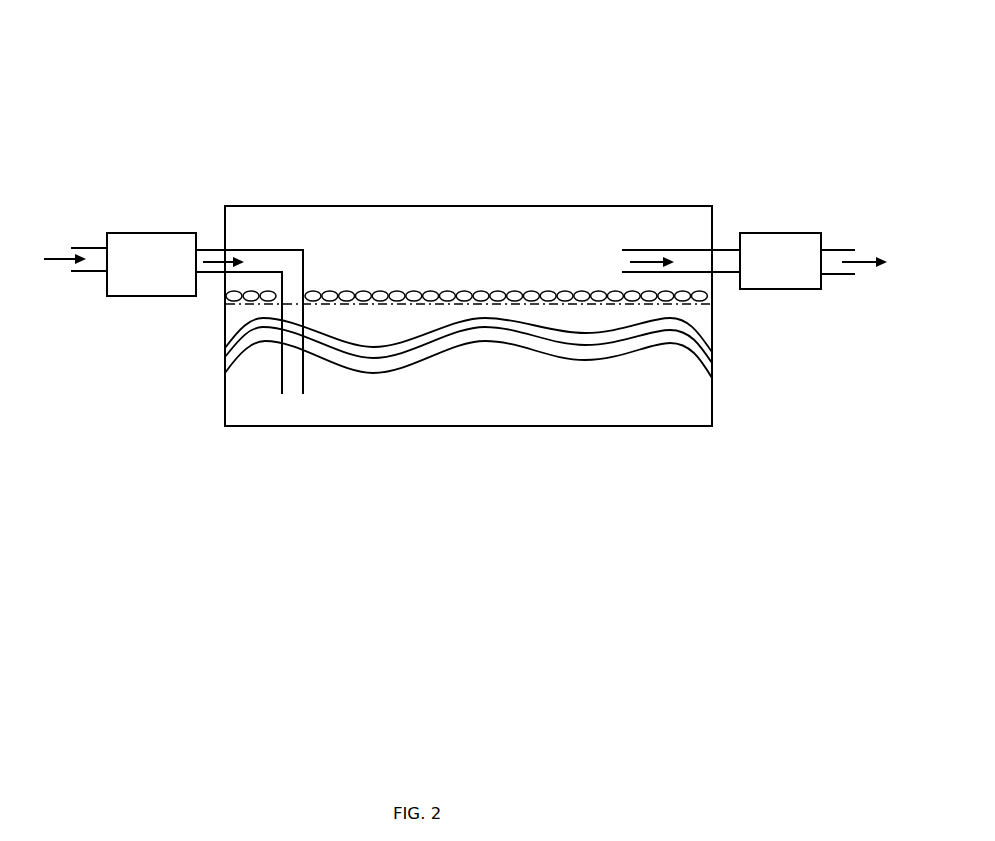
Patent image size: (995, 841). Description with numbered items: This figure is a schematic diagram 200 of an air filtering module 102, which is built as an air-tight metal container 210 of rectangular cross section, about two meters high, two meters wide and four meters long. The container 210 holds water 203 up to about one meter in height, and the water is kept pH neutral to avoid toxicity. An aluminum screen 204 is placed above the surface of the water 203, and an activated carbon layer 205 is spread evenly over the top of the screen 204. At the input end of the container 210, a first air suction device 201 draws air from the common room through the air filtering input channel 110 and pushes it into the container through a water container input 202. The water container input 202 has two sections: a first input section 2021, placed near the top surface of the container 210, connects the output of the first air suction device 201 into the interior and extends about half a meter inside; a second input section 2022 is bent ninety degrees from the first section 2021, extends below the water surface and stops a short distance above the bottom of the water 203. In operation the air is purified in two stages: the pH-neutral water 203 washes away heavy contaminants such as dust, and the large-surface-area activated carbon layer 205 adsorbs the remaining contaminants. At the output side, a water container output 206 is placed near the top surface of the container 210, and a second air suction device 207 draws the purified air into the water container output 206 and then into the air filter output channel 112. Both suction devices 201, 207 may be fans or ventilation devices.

The schematic diagram 200 is at (550, 84).
The air-tight metal container 210 is at (345, 206).
The air filtering module 102 is at (498, 248).
The first air suction device 201 is at (162, 273).
The second air suction device 207 is at (791, 273).
The air filtering input channel 110 is at (90, 247).
The air filter output channel 112 is at (836, 250).
The water container input 202 is at (266, 293).
The first input section 2021 is at (280, 250).
The second input section 2022 is at (303, 373).
The water container output 206 is at (657, 250).
The activated carbon layer 205 is at (360, 291).
The aluminum screen 204 is at (692, 302).
The water 203 is at (393, 413).